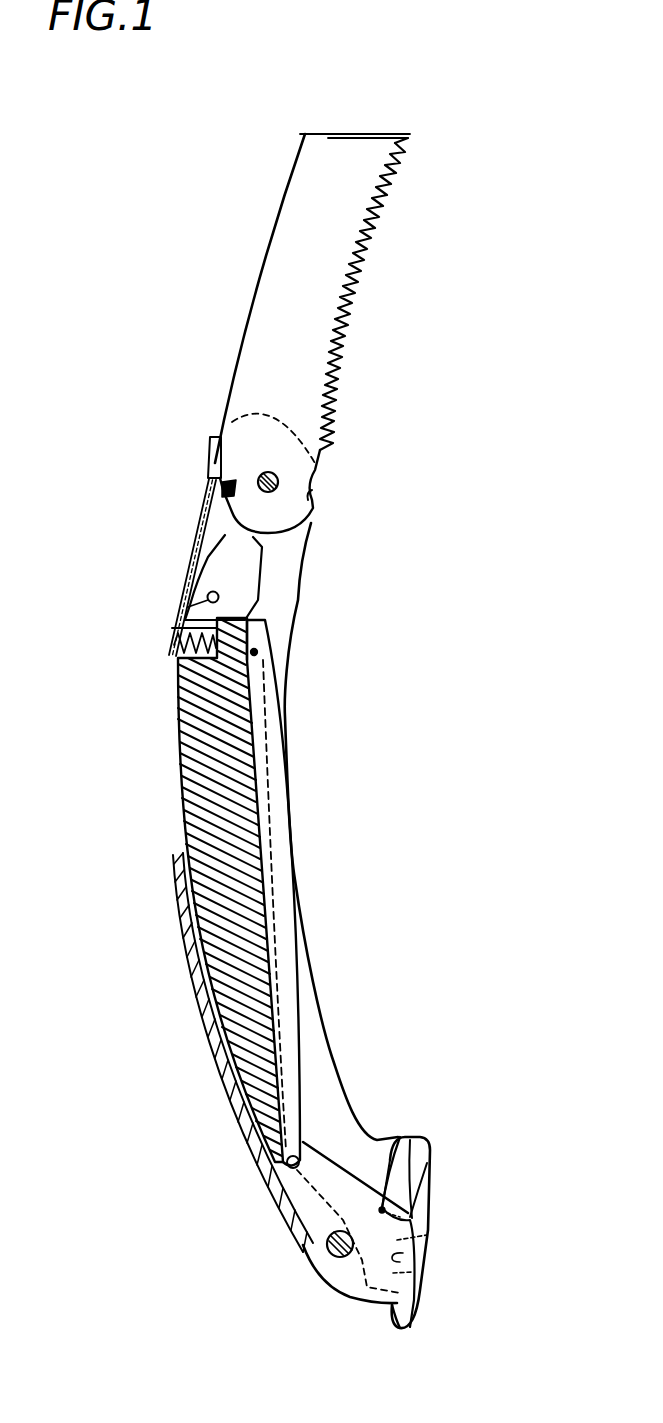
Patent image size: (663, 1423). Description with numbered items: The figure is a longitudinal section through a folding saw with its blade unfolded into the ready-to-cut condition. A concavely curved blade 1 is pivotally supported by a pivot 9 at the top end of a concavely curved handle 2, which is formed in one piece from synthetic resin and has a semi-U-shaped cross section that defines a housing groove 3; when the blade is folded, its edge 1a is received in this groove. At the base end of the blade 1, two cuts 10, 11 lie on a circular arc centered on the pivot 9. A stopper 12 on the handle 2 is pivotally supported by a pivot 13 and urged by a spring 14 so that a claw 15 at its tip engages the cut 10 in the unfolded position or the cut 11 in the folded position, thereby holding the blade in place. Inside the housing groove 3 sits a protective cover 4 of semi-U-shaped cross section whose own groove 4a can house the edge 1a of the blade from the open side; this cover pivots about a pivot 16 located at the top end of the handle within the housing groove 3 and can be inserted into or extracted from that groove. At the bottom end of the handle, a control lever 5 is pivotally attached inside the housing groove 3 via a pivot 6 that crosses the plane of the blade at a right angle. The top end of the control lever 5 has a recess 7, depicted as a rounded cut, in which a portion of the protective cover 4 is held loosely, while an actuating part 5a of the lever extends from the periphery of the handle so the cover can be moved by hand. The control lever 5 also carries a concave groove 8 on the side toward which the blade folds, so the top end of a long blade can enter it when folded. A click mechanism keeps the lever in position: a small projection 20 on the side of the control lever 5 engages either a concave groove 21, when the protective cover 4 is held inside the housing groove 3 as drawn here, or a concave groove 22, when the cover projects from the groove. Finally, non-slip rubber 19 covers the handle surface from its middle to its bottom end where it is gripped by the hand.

The blade 1 is at (273, 303).
The edge 1a is at (363, 293).
The handle 2 is at (178, 778).
The housing groove 3 is at (330, 1094).
The protective cover 4 is at (283, 812).
The groove 4a is at (278, 874).
The control lever 5 is at (397, 1240).
The actuating part 5a is at (387, 1300).
The pivot 6 is at (327, 1244).
The recess 7 is at (282, 1170).
The concave groove 8 is at (413, 1272).
The pivot 9 is at (279, 478).
The cut 10 is at (213, 470).
The cut 11 is at (313, 495).
The stopper 12 is at (186, 583).
The pivot 13 is at (206, 599).
The spring 14 is at (175, 650).
The claw 15 is at (228, 488).
The pivot 16 is at (262, 651).
The non-slip rubber 19 is at (195, 985).
The small projection 20 is at (383, 1205).
The concave groove 21 is at (411, 1216).
The concave groove 22 is at (427, 1235).